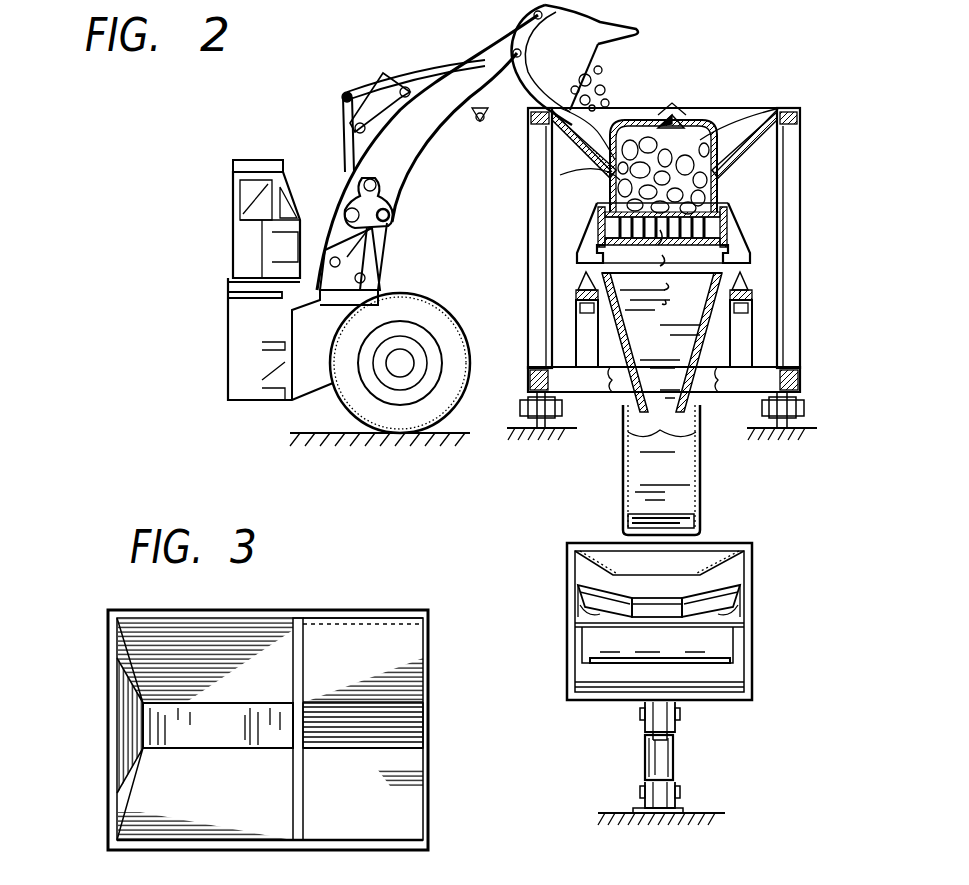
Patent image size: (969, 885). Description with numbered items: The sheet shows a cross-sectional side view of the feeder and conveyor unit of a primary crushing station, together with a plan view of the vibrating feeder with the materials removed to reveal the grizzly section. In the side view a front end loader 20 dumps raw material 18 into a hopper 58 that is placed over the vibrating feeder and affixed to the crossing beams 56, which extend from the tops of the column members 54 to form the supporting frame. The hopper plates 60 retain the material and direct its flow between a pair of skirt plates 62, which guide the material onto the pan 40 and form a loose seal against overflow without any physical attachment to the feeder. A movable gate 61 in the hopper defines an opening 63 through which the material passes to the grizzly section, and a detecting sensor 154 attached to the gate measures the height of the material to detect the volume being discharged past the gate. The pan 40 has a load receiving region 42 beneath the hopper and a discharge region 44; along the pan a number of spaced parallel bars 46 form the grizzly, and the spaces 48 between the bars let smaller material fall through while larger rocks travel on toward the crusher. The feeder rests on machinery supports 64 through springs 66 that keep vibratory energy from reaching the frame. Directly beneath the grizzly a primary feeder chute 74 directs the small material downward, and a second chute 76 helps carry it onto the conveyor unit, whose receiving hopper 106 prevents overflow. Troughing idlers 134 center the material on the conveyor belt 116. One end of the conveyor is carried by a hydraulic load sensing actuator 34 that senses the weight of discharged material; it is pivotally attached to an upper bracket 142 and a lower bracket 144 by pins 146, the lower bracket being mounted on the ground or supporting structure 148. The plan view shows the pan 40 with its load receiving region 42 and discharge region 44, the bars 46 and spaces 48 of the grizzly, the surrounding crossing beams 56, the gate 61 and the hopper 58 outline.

In FIG. 2, the raw material 18 is at (600, 78).
In FIG. 2, the front end loader 20 is at (362, 78).
In FIG. 2, the hydraulic load sensing actuator 34 is at (673, 758).
In FIG. 2, the pan 40 is at (705, 189).
In FIG. 3, the pan 40 is at (157, 715).
In FIG. 3, the load receiving region 42 is at (132, 730).
In FIG. 3, the discharge region 44 is at (355, 640).
In FIG. 2, the spaced parallel bars 46 is at (730, 235).
In FIG. 3, the spaced parallel bars 46 is at (415, 715).
In FIG. 2, the spaces 48 is at (610, 243).
In FIG. 3, the spaces 48 is at (395, 725).
In FIG. 2, the column members 54 is at (528, 183).
In FIG. 3, the crossing beams 56 is at (283, 597).
In FIG. 2, the hopper 58 is at (765, 105).
In FIG. 3, the hopper 58 is at (173, 812).
In FIG. 2, the hopper plates 60 is at (610, 165).
In FIG. 2, the movable gate 61 is at (728, 115).
In FIG. 3, the movable gate 61 is at (303, 642).
In FIG. 2, the skirt plates 62 is at (610, 183).
In FIG. 2, the opening 63 is at (690, 125).
In FIG. 2, the machinery supports 64 is at (590, 320).
In FIG. 2, the springs 66 is at (598, 292).
In FIG. 2, the primary feeder chute 74 is at (725, 365).
In FIG. 2, the second chute 76 is at (700, 478).
In FIG. 2, the receiving hopper 106 is at (722, 560).
In FIG. 2, the conveyor belt 116 is at (648, 598).
In FIG. 2, the troughing idlers 134 is at (578, 612).
In FIG. 2, the bracket 142 is at (645, 718).
In FIG. 2, the bracket 144 is at (675, 802).
In FIG. 2, the pins 146 is at (675, 712).
In FIG. 2, the supporting structure 148 is at (672, 820).
In FIG. 2, the detecting sensor 154 is at (660, 118).